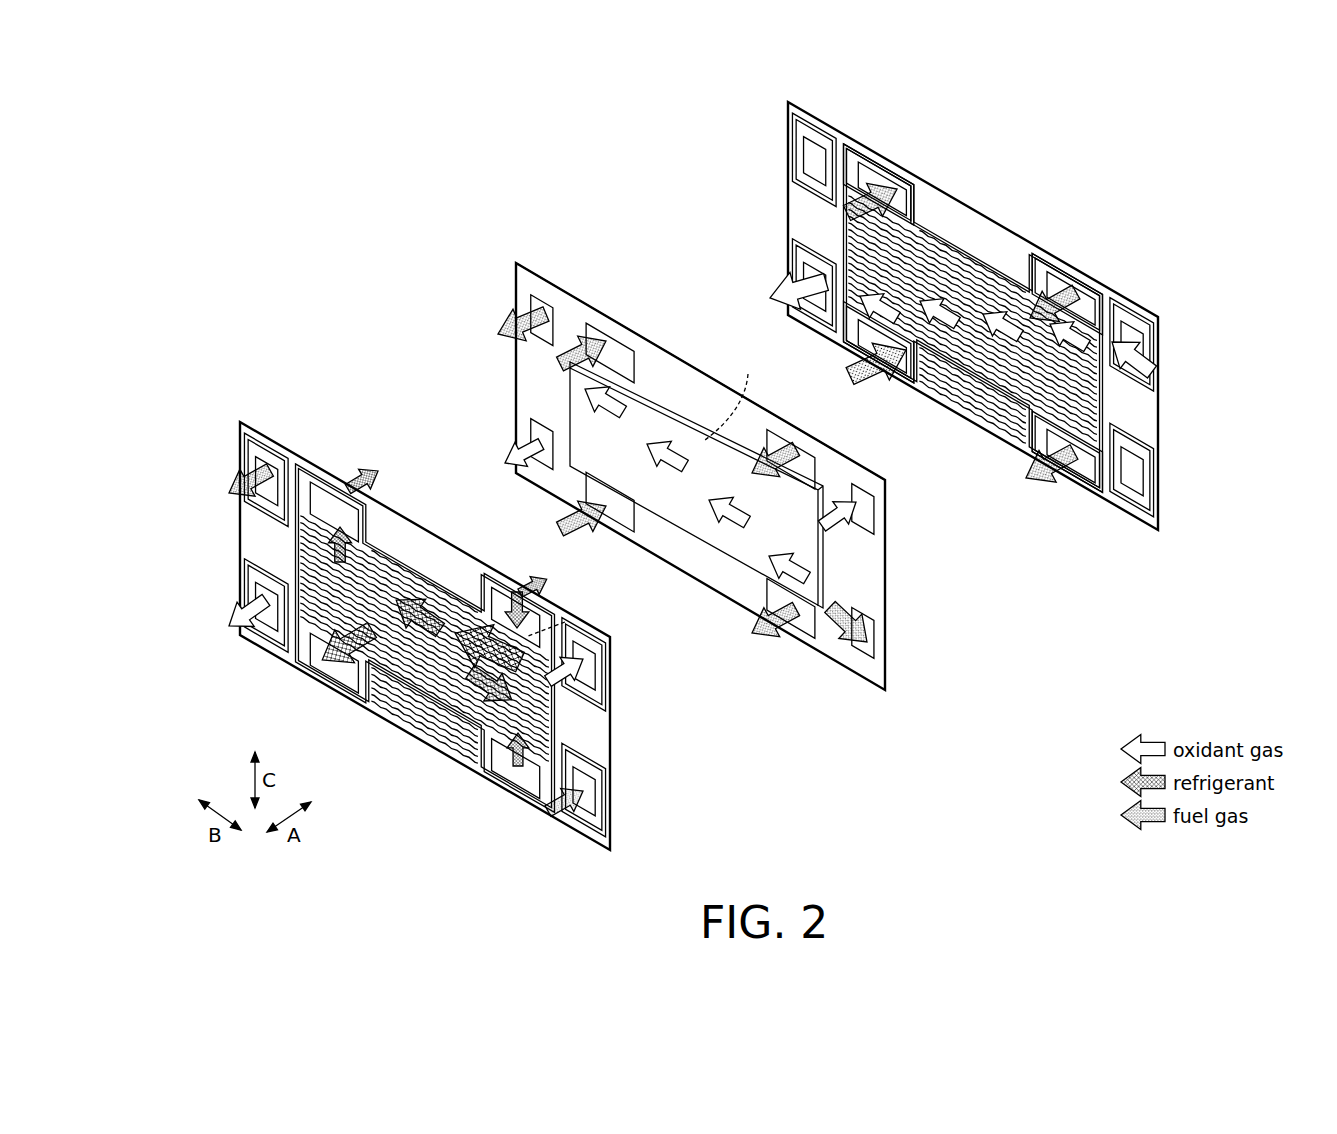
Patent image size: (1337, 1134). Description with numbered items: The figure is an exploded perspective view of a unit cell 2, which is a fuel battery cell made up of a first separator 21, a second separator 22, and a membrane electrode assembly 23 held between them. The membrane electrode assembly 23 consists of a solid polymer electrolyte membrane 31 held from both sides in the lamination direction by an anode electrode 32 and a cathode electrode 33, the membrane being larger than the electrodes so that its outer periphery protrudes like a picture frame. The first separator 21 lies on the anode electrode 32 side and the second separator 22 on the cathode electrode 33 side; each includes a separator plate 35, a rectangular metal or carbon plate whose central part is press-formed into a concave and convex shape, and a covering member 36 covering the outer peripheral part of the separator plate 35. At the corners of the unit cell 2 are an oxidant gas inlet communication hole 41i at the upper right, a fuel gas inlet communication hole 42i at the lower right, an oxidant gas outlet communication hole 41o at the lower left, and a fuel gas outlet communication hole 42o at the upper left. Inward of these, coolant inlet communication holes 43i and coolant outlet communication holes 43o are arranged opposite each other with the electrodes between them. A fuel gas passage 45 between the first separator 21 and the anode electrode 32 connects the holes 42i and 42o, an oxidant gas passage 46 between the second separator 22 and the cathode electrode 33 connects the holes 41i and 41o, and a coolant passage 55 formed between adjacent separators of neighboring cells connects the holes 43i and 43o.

The unit cell 2 is at (607, 201).
The first separator 21 is at (614, 747).
The second separator 22 is at (989, 214).
The membrane electrode assembly 23 is at (531, 262).
The solid polymer electrolyte membrane 31 is at (655, 354).
The anode electrode 32 is at (668, 410).
The cathode electrode 33 is at (731, 393).
The separator plate 35 is at (420, 574).
The covering member 36 is at (395, 508).
The oxidant gas inlet communication hole 41i is at (598, 668).
The oxidant gas outlet communication hole 41o is at (260, 586).
The fuel gas inlet communication hole 42i is at (600, 810).
The fuel gas outlet communication hole 42o is at (260, 466).
The coolant inlet communication hole 43i is at (495, 600).
The coolant outlet communication hole 43o is at (324, 482).
The fuel gas passage 45 is at (565, 622).
The oxidant gas passage 46 is at (1007, 320).
The coolant passage 55 is at (437, 658).